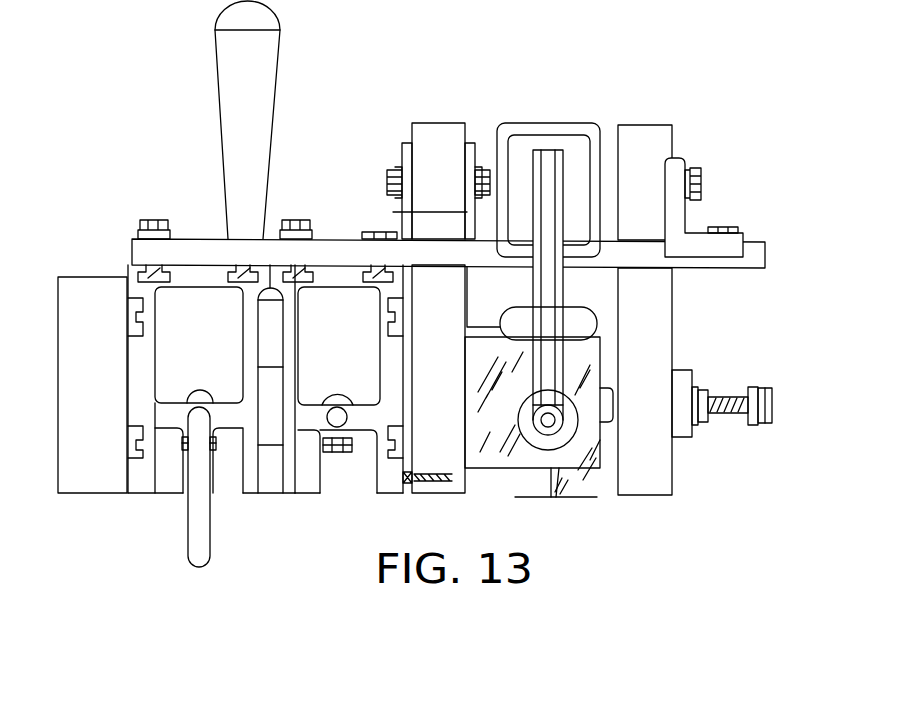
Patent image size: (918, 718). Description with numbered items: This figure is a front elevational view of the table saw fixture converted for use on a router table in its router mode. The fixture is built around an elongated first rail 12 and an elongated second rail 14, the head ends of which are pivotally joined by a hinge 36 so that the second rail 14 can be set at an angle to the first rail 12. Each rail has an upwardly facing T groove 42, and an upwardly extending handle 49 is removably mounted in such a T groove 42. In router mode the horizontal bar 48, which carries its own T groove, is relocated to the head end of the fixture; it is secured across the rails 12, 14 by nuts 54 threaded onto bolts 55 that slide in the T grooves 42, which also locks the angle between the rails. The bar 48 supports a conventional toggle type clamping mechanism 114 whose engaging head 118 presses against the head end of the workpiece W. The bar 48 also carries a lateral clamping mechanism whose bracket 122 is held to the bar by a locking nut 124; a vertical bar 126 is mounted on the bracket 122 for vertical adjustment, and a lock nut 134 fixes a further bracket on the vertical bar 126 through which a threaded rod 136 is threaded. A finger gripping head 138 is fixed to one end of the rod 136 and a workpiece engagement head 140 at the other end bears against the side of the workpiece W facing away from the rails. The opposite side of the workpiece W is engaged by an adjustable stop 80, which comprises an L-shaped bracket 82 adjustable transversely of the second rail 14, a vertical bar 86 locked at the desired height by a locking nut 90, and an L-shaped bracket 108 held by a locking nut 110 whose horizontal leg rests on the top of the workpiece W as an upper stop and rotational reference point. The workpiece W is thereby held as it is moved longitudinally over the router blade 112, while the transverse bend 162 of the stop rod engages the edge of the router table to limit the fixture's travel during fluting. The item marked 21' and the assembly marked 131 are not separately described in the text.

The first rail 12 is at (170, 490).
The second rail 14 is at (356, 478).
The block 21' is at (92, 406).
The hinge 36 is at (270, 487).
The T groove 42 is at (147, 268).
The second horizontal bar 48 is at (757, 253).
The handle 49 is at (265, 58).
The nut 54 is at (152, 218).
The bolt 55 is at (140, 270).
The adjustable stop 80 is at (425, 262).
The L-shaped bracket 82 is at (405, 143).
The vertical bar 86 is at (423, 130).
The locking nut 90 is at (387, 176).
The L-shaped bracket 108 is at (407, 212).
The locking nut 110 is at (487, 165).
The router blade 112 is at (575, 485).
The toggle type clamping mechanism 114 is at (593, 292).
The engaging head 118 is at (540, 448).
The bracket 122 is at (549, 163).
The locking nut 124 is at (727, 228).
The vertical bar 126 is at (628, 132).
The adjustment assembly 131 is at (754, 376).
The lock nut 134 is at (700, 170).
The threaded rod 136 is at (730, 410).
The finger gripping head 138 is at (767, 393).
The workpiece engagement head 140 is at (606, 420).
The transverse bend 162 is at (193, 539).
The workpiece W is at (592, 368).